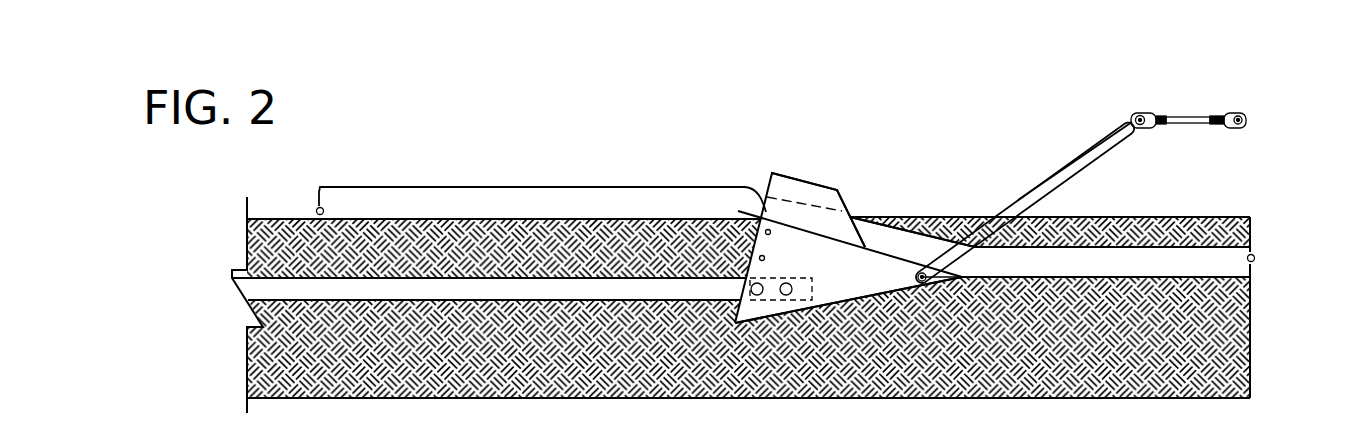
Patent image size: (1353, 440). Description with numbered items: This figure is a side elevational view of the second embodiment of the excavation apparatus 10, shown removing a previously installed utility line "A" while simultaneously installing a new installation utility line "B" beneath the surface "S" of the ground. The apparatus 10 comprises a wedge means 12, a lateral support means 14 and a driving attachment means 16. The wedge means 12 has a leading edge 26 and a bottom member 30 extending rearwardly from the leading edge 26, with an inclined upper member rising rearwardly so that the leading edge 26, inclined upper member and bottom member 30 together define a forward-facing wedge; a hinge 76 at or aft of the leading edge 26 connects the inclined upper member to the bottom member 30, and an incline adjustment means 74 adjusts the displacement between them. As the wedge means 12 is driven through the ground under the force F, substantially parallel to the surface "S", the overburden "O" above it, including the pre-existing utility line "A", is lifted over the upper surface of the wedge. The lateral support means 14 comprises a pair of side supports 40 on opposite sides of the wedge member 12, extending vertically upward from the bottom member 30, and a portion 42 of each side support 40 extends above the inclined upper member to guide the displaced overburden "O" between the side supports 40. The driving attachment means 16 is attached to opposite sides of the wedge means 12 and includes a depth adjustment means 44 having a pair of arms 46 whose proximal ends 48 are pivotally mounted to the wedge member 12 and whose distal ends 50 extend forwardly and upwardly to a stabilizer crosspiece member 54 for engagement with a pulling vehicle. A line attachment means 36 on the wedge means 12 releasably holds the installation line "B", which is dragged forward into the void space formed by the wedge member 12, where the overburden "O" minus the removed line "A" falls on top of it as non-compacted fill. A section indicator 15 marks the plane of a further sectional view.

The excavation apparatus 10 is at (943, 116).
The wedge means 12 is at (789, 316).
The lateral support means 14 is at (768, 172).
The section line 15 is at (916, 20).
The driving attachment means 16 is at (870, 221).
The leading edge 26 is at (943, 268).
The bottom member 30 is at (822, 306).
The line attachment means 36 is at (752, 293).
The side supports 40 is at (748, 302).
The portion of side support 42 is at (812, 190).
The depth adjustment means 44 is at (1066, 132).
The arms 46 is at (1058, 178).
The proximal ends 48 is at (932, 272).
The distal ends 50 is at (1130, 125).
The stabilizer crosspiece member 54 is at (1187, 116).
The incline adjustment means 74 is at (758, 221).
The hinge 76 is at (962, 278).
The installation utility line B is at (258, 286).
The overburden O is at (1100, 253).
The surface of the ground S is at (1177, 215).
The pre-existing utility line A is at (1217, 257).
The force F is at (1350, 106).